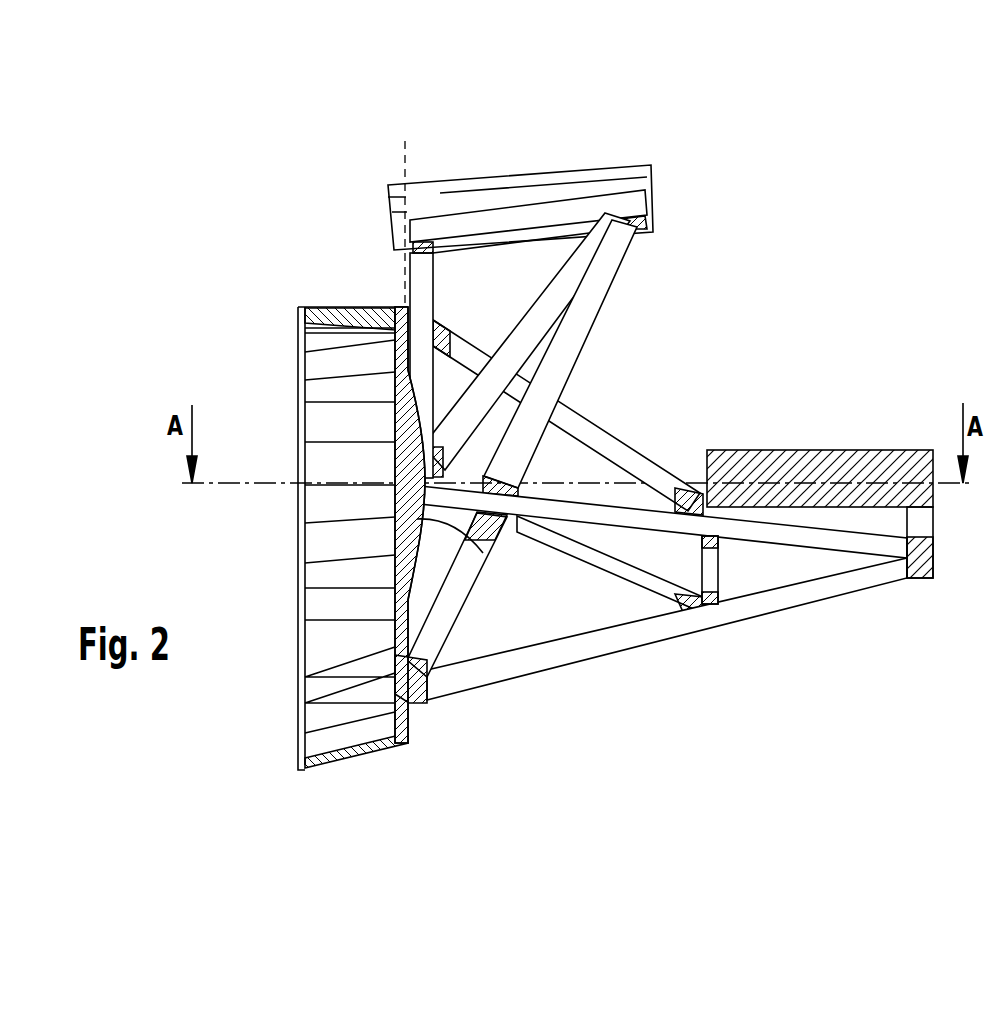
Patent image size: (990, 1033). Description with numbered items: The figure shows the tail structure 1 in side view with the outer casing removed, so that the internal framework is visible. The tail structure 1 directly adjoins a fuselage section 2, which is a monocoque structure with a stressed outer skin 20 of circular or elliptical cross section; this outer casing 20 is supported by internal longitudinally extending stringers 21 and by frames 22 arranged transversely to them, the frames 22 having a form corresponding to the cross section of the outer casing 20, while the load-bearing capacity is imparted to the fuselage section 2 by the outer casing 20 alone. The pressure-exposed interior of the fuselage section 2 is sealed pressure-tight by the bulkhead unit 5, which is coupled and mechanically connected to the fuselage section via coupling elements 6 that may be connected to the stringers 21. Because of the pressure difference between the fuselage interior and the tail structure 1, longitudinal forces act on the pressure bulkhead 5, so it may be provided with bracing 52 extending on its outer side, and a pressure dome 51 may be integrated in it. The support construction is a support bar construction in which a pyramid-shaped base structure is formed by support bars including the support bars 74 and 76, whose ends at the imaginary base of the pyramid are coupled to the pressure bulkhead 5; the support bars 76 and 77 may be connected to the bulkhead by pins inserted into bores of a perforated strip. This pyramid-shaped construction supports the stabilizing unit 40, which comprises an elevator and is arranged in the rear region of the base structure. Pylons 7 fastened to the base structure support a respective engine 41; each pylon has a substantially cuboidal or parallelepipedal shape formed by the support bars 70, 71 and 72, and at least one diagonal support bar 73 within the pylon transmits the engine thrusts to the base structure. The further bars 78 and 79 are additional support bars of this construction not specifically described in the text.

The tail structure 1 is at (937, 152).
The fuselage section 2 is at (297, 152).
The bulkhead unit 5 is at (449, 582).
The coupling elements 6 is at (343, 306).
The pylon 7 is at (657, 465).
The outer skin 20 is at (304, 504).
The stringers 21 is at (317, 368).
The frames 22 is at (312, 341).
The stabilizing unit 40 is at (857, 415).
The engine 41 is at (630, 178).
The pressure dome 51 is at (483, 547).
The bracing 52 is at (393, 695).
The support bar 70 is at (563, 357).
The support bar 71 is at (522, 217).
The support bar 72 is at (425, 297).
The diagonal support bar 73 is at (560, 300).
The support bar 74 is at (610, 500).
The support bar 76 is at (640, 636).
The support bar 77 is at (458, 583).
The strut 78 is at (633, 577).
The support strut 79 is at (712, 565).